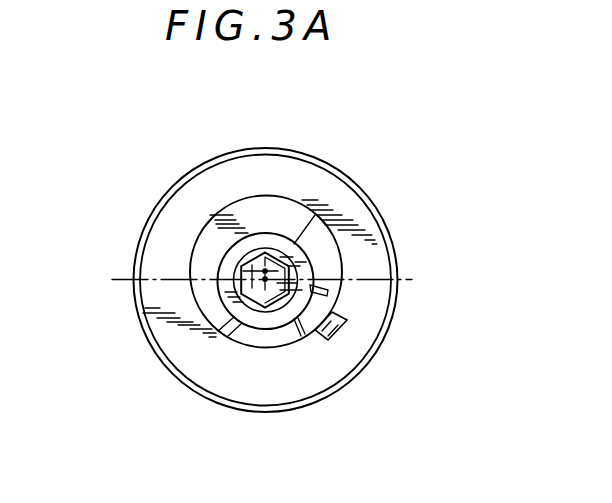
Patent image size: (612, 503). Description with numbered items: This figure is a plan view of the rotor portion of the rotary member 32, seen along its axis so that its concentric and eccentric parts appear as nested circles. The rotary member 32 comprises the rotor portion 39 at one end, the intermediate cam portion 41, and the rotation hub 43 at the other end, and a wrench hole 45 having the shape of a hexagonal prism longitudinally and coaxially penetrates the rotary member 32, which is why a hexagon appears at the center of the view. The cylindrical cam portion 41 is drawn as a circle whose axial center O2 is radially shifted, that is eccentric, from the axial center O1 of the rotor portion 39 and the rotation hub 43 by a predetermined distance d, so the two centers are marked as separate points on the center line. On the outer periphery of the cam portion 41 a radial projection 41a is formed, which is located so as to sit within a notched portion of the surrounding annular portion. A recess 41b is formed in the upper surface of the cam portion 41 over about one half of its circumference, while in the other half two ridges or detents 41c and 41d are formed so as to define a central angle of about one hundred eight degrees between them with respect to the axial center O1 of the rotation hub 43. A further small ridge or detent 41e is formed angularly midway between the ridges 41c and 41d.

The rotary member 32 is at (398, 380).
The rotor portion 39 is at (162, 290).
The cam portion 41 is at (340, 248).
The radial projection 41a is at (326, 341).
The recess 41b is at (262, 212).
The ridge 41c is at (342, 302).
The ridge 41d is at (230, 337).
The small ridge 41e is at (285, 348).
The rotation hub 43 is at (227, 253).
The wrench hole 45 is at (338, 288).
The predetermined distance d is at (235, 276).
The axial center of rotation hub O1 is at (265, 281).
The axial center of cam portion O2 is at (266, 271).